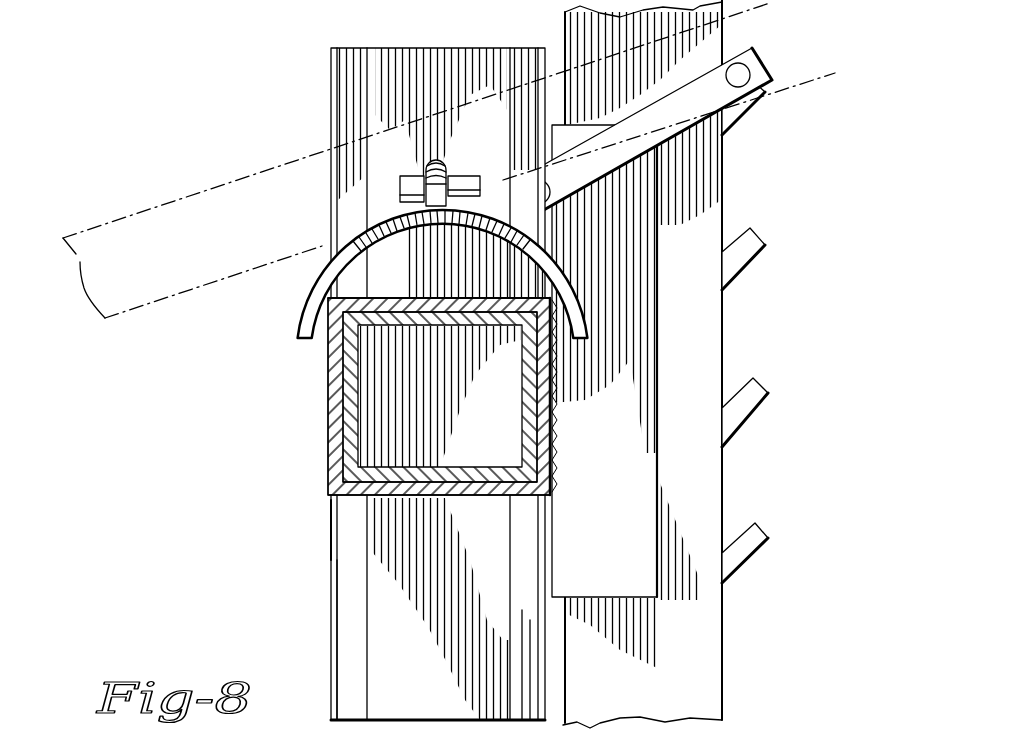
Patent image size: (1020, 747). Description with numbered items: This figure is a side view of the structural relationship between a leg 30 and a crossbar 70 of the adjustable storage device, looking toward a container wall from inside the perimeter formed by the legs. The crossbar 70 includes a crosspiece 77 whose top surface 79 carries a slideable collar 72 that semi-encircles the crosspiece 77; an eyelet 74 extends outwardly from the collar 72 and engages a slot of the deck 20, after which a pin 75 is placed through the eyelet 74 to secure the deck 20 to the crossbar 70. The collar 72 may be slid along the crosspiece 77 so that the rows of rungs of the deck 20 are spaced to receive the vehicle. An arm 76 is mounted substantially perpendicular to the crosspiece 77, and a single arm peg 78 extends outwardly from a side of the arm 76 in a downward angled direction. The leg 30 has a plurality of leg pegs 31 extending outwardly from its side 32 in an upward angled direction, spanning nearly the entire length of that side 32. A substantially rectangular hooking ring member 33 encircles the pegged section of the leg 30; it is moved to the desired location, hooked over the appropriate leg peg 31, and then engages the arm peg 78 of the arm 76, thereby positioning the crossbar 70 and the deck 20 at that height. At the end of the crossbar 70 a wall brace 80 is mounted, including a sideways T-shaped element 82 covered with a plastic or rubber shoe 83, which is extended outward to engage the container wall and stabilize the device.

The deck 20 is at (212, 189).
The leg 30 is at (723, 33).
The leg peg 31 is at (728, 120).
The side of leg 32 is at (722, 483).
The hooking ring member 33 is at (682, 110).
The crossbar 70 is at (327, 462).
The slideable collar 72 is at (310, 296).
The eyelet 74 is at (446, 158).
The pin 75 is at (402, 176).
The arm 76 is at (628, 483).
The crosspiece 77 is at (323, 420).
The arm peg 78 is at (528, 168).
The top surface 79 is at (437, 298).
The wall brace 80 is at (305, 523).
The T-shaped element 82 is at (331, 80).
The shoe 83 is at (330, 563).